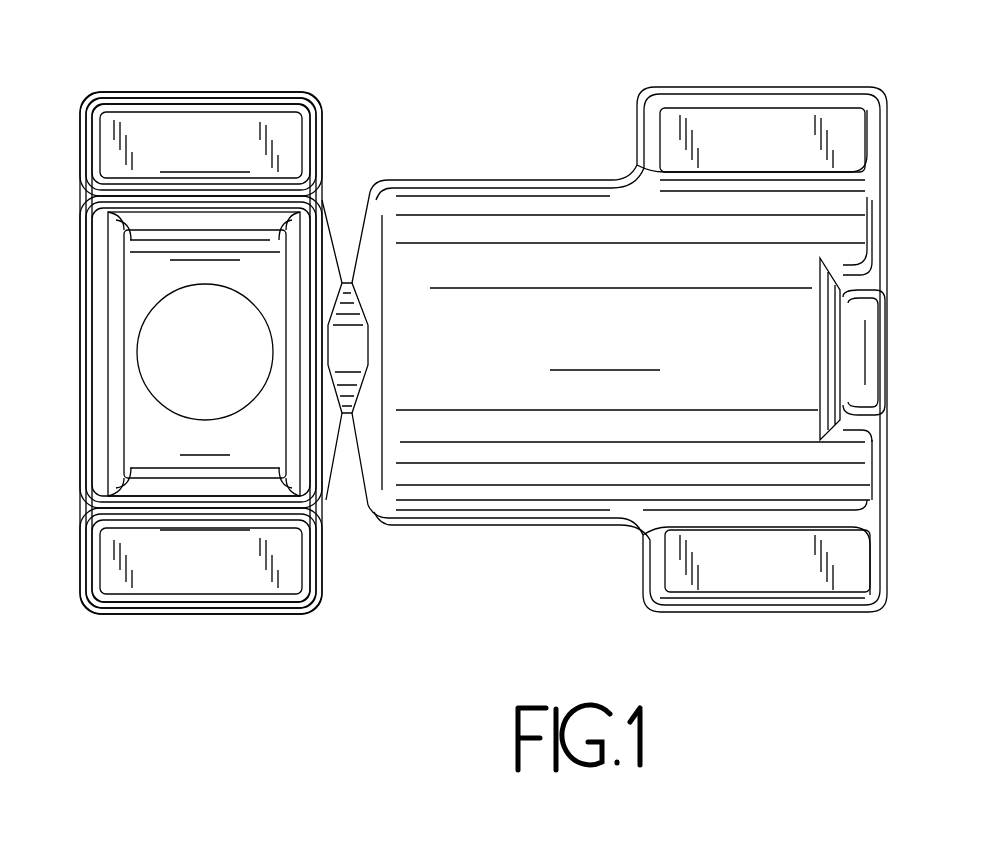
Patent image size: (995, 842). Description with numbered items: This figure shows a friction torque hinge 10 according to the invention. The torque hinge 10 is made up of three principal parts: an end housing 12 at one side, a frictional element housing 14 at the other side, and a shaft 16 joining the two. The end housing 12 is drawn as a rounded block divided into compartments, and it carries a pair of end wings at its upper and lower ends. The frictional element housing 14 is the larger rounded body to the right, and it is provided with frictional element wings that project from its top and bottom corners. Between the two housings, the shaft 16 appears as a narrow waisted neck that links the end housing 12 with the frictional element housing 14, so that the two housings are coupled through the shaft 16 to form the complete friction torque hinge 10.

The friction torque hinge 10 is at (428, 98).
The end housing 12 is at (210, 92).
The frictional element housing 14 is at (574, 184).
The shaft 16 is at (347, 418).